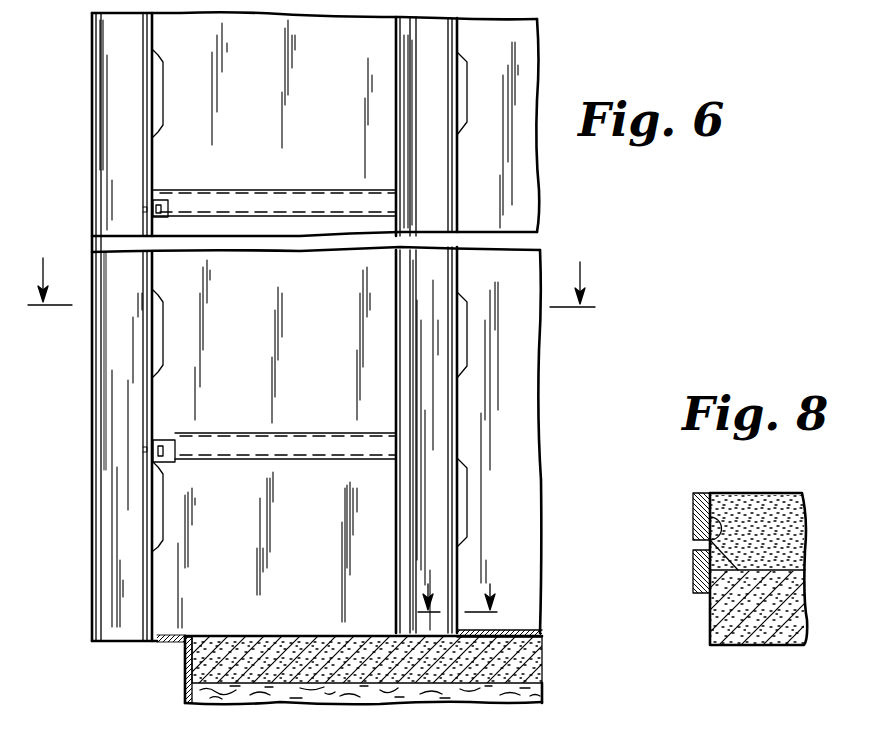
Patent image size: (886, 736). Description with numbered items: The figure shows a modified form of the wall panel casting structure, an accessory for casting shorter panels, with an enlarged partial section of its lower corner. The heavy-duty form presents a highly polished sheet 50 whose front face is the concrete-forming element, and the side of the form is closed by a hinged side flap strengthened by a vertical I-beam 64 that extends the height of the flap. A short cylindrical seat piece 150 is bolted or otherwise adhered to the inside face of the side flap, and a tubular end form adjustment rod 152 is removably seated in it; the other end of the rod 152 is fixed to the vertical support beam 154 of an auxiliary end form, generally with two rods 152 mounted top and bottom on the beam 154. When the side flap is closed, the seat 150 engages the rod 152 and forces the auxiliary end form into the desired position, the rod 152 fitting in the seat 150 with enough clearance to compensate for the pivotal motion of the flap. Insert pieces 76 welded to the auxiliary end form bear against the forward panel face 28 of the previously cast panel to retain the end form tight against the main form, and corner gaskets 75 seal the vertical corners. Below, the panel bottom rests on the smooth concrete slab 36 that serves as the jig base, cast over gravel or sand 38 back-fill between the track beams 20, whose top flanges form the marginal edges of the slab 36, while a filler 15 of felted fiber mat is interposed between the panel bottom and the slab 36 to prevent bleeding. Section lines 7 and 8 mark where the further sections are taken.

In FIG. 6, the section line 7- 7 is at (312, 282).
In FIG. 6, the section line 8- 8 is at (461, 590).
In FIG. 6, the filler 15 is at (542, 628).
In FIG. 6, the track beam 20 is at (185, 666).
In FIG. 8, the forward panel face 28 is at (788, 570).
In FIG. 6, the concrete slab 36 is at (288, 650).
In FIG. 6, the gravel or sand 38 is at (258, 703).
In FIG. 6, the polished sheet 50 is at (528, 348).
In FIG. 6, the I-beam 64 is at (110, 614).
In FIG. 8, the gaskets 75 is at (708, 577).
In FIG. 8, the insert pieces 76 is at (712, 518).
In FIG. 6, the cylindrical seat piece 150 is at (166, 200).
In FIG. 6, the end form adjustment rod 152 is at (322, 188).
In FIG. 6, the vertical support beam 154 is at (396, 331).